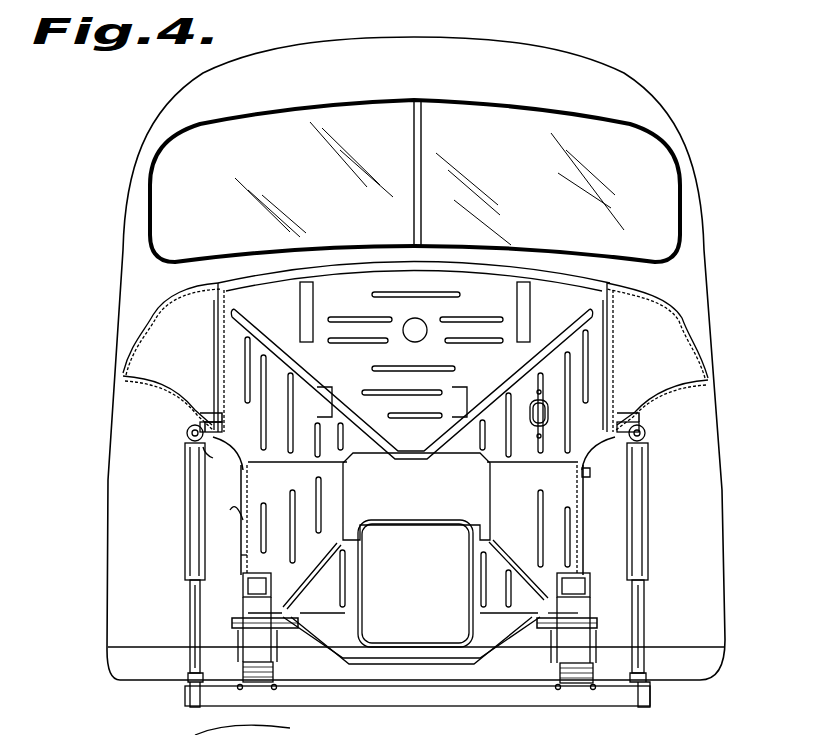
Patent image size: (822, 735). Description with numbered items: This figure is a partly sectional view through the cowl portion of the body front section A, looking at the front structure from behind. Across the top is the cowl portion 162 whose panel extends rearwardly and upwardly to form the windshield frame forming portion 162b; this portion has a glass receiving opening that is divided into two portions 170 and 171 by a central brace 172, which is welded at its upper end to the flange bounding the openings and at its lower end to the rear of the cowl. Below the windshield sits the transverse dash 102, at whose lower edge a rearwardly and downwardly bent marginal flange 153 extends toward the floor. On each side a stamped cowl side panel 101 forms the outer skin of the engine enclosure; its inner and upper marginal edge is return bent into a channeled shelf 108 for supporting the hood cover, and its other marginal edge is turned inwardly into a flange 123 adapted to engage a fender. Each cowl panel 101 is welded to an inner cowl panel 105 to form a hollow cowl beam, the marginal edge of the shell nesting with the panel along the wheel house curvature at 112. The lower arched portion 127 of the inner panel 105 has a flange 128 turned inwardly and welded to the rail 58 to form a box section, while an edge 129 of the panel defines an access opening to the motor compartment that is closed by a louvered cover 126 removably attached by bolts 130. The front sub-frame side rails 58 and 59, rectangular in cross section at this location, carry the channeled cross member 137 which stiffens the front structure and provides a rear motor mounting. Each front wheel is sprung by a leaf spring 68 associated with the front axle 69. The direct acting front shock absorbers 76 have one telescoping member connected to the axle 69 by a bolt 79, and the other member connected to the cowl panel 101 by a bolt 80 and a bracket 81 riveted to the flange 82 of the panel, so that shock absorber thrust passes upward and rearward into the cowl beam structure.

The body front section A is at (488, 45).
The cowl portion 162 is at (598, 248).
The windshield frame forming portion 162b is at (150, 192).
The brace 172 is at (421, 125).
The glass receiving opening portion 170 is at (322, 170).
The glass receiving opening portion 171 is at (527, 173).
The transverse dash 102 is at (355, 283).
The channeled shelf 108 is at (235, 298).
The inner cowl panel 105 is at (219, 327).
The cowl side panel 101 is at (145, 340).
The flange 123 is at (125, 374).
The flange 82 is at (205, 410).
The bracket 81 is at (217, 427).
The bolt 80 is at (186, 433).
The nesting region of shell and panel 112 is at (210, 455).
The lower arched portion 127 is at (240, 467).
The bolts 130 is at (249, 475).
The cover 126 is at (243, 520).
The edge 129 is at (243, 560).
The marginal flange 153 is at (335, 497).
The channeled cross member 137 is at (460, 658).
The flange 128 is at (280, 563).
The front shock absorber 76 is at (186, 502).
The bolt 79 is at (205, 682).
The channel side rail 58 is at (243, 585).
The channel side rail 59 is at (590, 590).
The leaf spring 68 is at (275, 668).
The front axle 69 is at (435, 703).